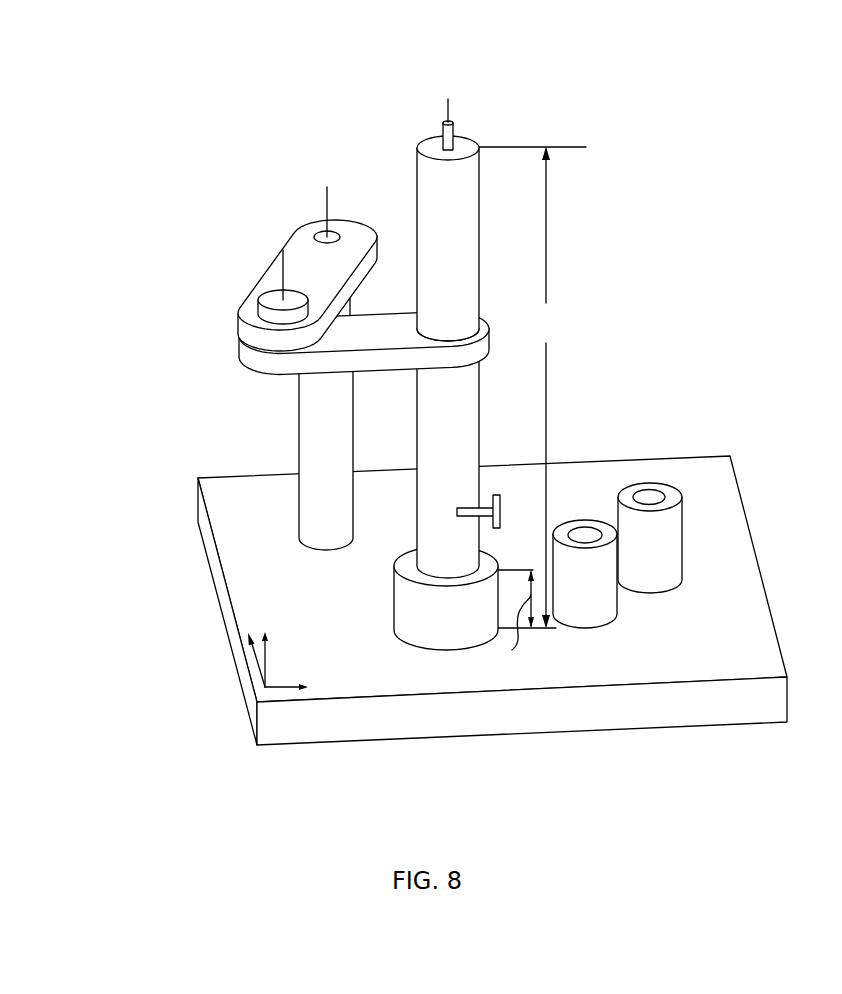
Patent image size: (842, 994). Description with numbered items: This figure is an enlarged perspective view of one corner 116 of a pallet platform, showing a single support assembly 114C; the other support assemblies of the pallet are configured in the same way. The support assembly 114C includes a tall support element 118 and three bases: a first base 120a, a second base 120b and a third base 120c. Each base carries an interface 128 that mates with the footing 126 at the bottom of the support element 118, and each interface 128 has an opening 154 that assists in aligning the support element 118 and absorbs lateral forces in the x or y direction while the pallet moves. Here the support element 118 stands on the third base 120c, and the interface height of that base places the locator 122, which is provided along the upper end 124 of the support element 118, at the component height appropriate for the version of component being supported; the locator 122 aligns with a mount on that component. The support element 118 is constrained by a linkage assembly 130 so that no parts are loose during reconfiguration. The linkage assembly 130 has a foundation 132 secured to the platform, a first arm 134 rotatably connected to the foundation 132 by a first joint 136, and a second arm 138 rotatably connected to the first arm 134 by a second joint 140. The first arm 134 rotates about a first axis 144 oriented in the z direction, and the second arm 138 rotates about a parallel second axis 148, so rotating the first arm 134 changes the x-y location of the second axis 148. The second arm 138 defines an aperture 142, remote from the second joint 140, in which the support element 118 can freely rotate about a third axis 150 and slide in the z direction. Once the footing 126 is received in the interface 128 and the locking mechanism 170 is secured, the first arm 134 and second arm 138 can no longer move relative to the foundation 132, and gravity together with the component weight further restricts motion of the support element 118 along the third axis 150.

The support assembly 114C is at (706, 352).
The corner 116 is at (332, 630).
The support element 118 is at (350, 319).
The first base 120a is at (665, 563).
The second base 120b is at (593, 613).
The third base 120c is at (392, 615).
The locator 122 is at (455, 138).
The end 124 is at (434, 140).
The footing 126 is at (400, 557).
The interface 128 is at (667, 553).
The linkage assembly 130 is at (320, 372).
The foundation 132 is at (299, 448).
The first arm 134 is at (298, 245).
The first joint 136 is at (328, 234).
The second arm 138 is at (378, 373).
The second joint 140 is at (265, 295).
The aperture 142 is at (418, 326).
The first axis 144 is at (323, 207).
The second axis 148 is at (283, 268).
The third axis 150 is at (452, 97).
The opening 154 is at (648, 497).
The locking mechanism 170 is at (512, 504).